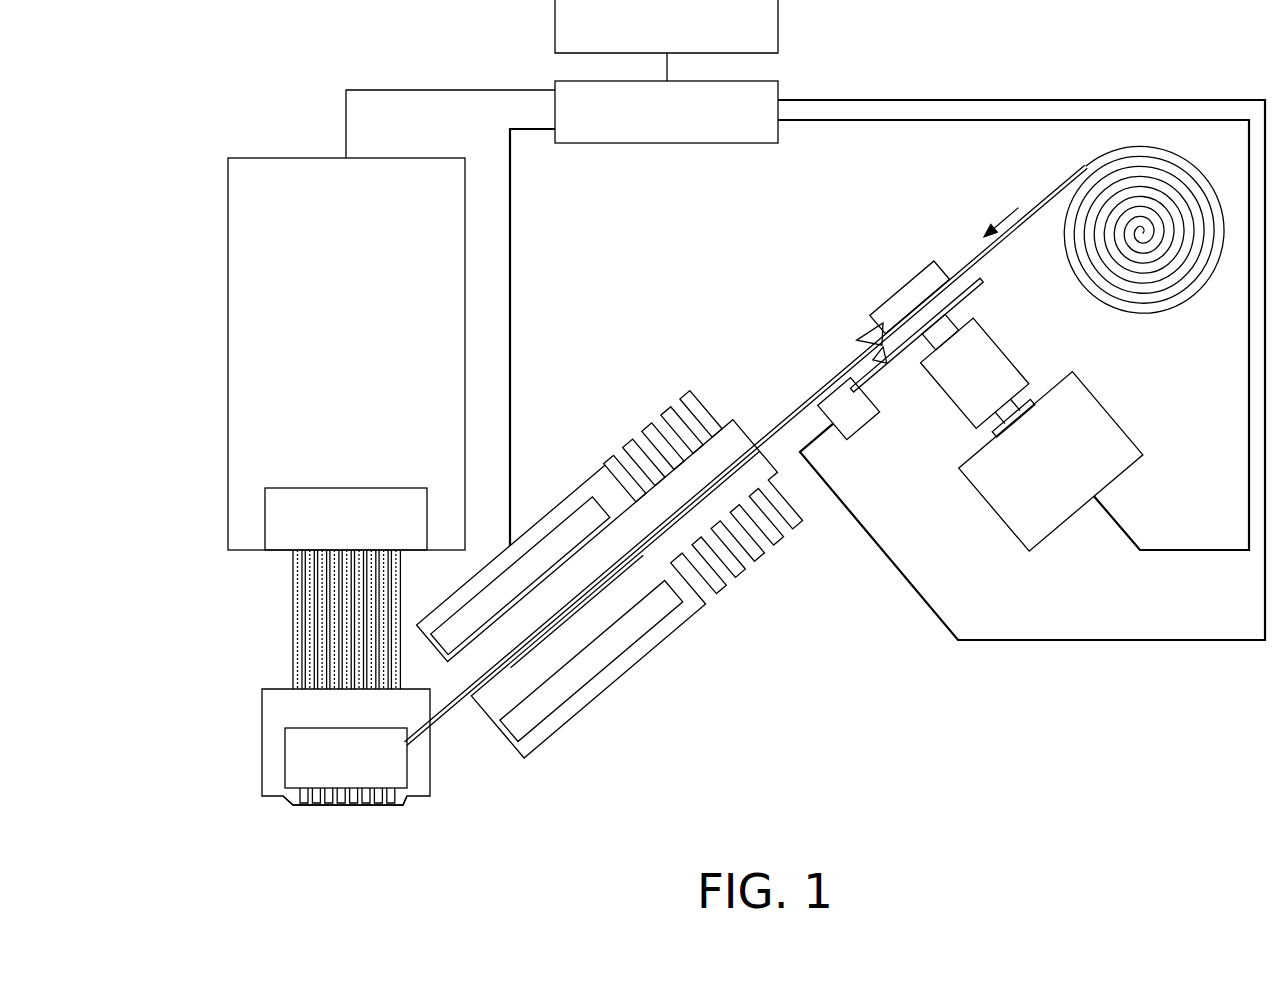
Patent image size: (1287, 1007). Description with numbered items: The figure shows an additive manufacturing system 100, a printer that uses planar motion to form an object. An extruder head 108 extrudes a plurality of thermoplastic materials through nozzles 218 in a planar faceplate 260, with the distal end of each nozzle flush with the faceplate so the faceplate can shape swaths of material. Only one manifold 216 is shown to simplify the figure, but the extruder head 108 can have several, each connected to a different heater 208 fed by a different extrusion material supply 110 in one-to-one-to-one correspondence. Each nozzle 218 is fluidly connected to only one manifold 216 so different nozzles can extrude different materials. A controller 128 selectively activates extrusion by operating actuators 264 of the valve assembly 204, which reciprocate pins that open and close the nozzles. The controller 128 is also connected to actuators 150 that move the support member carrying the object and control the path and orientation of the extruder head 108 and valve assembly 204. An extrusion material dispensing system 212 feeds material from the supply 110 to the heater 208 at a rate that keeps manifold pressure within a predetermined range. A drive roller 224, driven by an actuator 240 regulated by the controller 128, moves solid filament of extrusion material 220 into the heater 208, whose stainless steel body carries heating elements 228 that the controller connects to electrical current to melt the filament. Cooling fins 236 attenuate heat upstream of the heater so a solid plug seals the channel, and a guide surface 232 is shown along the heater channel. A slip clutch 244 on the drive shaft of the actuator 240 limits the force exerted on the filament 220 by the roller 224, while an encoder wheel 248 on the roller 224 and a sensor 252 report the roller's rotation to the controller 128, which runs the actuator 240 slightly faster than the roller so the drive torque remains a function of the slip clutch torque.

The additive manufacturing system 100 is at (163, 82).
The valve assembly 204 is at (292, 157).
The actuators 264 is at (350, 487).
The extruder head 108 is at (256, 678).
The manifold 216 is at (410, 773).
The nozzles 218 is at (306, 812).
The faceplate 260 is at (407, 802).
The controller 128 is at (667, 143).
The actuators 150 is at (779, 22).
The extrusion material dispensing system 212 is at (963, 558).
The extrusion material filament 220 is at (1032, 204).
The extrusion material supply 110 is at (1206, 184).
The heater 208 is at (602, 688).
The heating elements 228 is at (570, 510).
The cooling fins 236 is at (687, 393).
The guide surface 232 is at (510, 668).
The drive roller 224 is at (901, 283).
The encoder wheel 248 is at (900, 368).
The sensor 252 is at (855, 440).
The slip clutch 244 is at (1025, 384).
The actuator 240 is at (1115, 406).